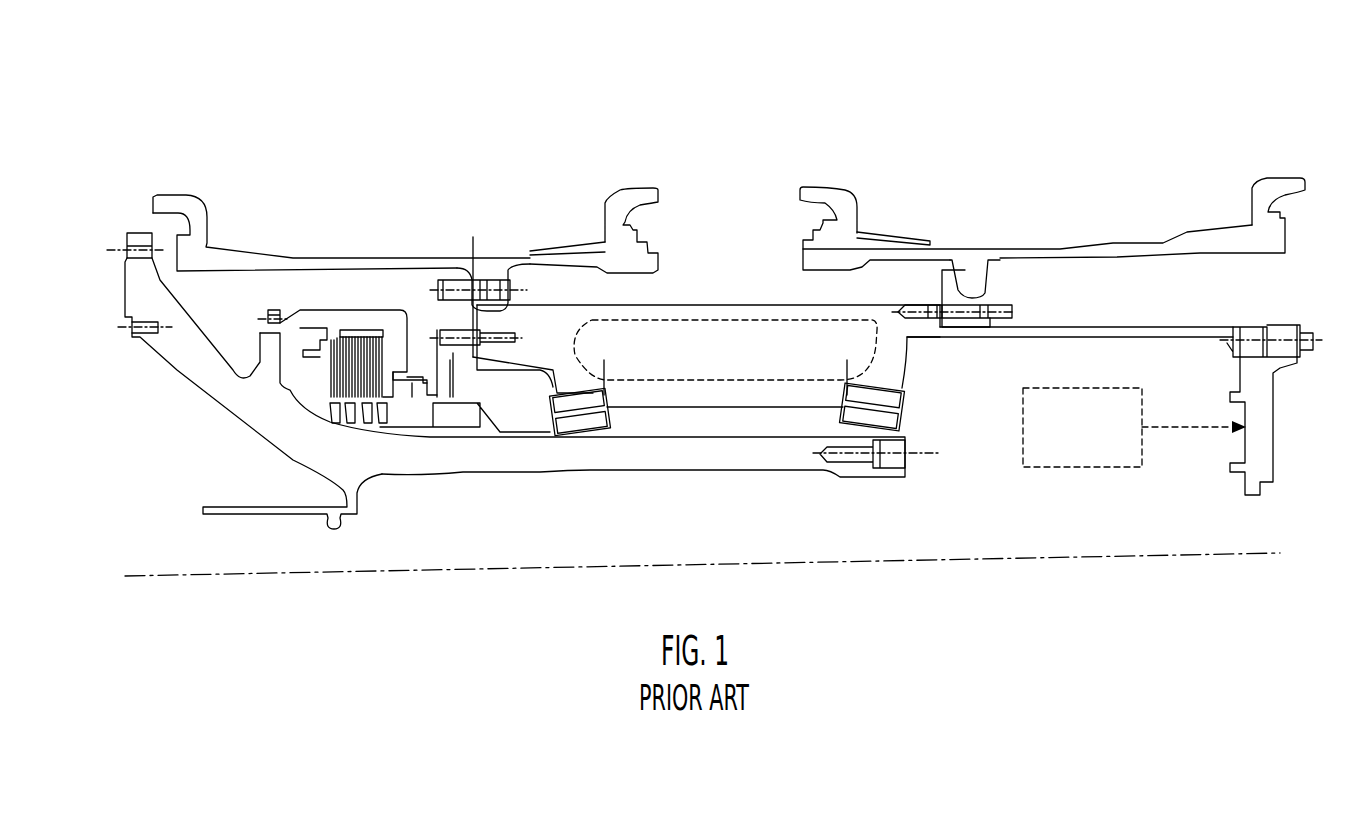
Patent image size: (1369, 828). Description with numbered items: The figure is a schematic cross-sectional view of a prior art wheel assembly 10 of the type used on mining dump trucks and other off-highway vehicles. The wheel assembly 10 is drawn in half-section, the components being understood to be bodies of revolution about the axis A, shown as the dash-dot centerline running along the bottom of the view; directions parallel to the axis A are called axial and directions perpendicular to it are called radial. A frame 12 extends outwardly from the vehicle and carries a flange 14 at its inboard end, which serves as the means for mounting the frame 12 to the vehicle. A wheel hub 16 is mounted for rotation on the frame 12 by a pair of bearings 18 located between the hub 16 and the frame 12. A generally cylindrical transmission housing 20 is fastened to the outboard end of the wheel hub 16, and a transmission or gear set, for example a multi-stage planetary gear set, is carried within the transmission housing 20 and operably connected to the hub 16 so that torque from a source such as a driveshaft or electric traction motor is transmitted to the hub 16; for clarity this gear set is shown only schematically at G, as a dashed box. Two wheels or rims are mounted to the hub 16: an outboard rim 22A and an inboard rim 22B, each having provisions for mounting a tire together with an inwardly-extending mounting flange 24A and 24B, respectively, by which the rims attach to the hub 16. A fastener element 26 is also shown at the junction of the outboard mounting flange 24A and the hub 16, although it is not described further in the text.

The wheel assembly 10 is at (910, 114).
The frame 12 is at (530, 458).
The flange 14 is at (142, 304).
The wheel hub 16 is at (742, 307).
The bearings 18 is at (830, 412).
The transmission housing 20 is at (1175, 327).
The outboard rim 22A is at (1178, 245).
The inboard rim 22B is at (217, 253).
The mounting flange 24A is at (972, 260).
The mounting flange 24B is at (490, 265).
The fastener 26 is at (950, 293).
The axis A is at (941, 560).
The gear set G is at (1134, 427).